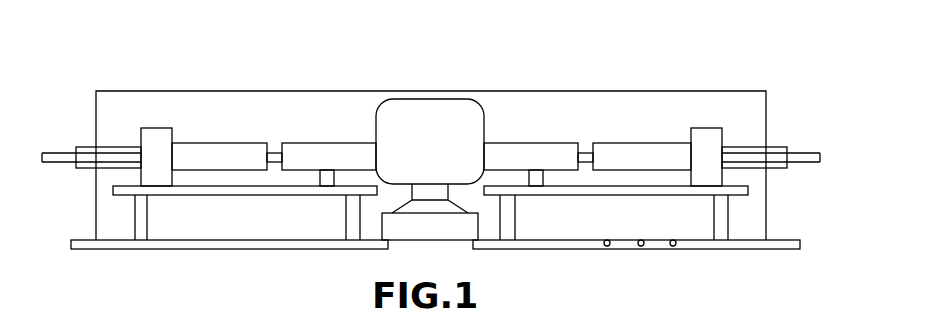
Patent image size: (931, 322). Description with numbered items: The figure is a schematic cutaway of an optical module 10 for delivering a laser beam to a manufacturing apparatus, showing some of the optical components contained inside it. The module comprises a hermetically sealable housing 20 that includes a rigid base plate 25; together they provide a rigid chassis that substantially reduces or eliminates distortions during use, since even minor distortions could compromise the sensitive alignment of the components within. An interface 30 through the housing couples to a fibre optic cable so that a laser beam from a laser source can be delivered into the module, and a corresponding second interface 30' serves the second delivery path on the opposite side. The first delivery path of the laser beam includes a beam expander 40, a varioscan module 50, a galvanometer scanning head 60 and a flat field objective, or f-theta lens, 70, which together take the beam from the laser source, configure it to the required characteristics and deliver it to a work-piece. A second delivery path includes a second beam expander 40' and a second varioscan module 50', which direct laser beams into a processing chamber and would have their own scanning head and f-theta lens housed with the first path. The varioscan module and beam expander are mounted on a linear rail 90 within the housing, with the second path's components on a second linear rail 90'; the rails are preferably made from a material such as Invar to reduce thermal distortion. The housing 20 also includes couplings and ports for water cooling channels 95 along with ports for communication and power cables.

The optical module 10 is at (663, 70).
The hermetically sealable housing 20 is at (768, 92).
The rigid base plate 25 is at (758, 249).
The interface 30 is at (771, 135).
The second interface 30' is at (91, 135).
The beam expander 40 is at (657, 144).
The second beam expander 40' is at (211, 144).
The varioscan module 50 is at (538, 144).
The second varioscan module 50' is at (329, 144).
The galvanometer scanning head 60 is at (413, 99).
The flat field objective (f-theta lens) 70 is at (390, 223).
The linear rail 90 is at (616, 213).
The second linear rail 90' is at (245, 213).
The water cooling channels 95 is at (672, 246).